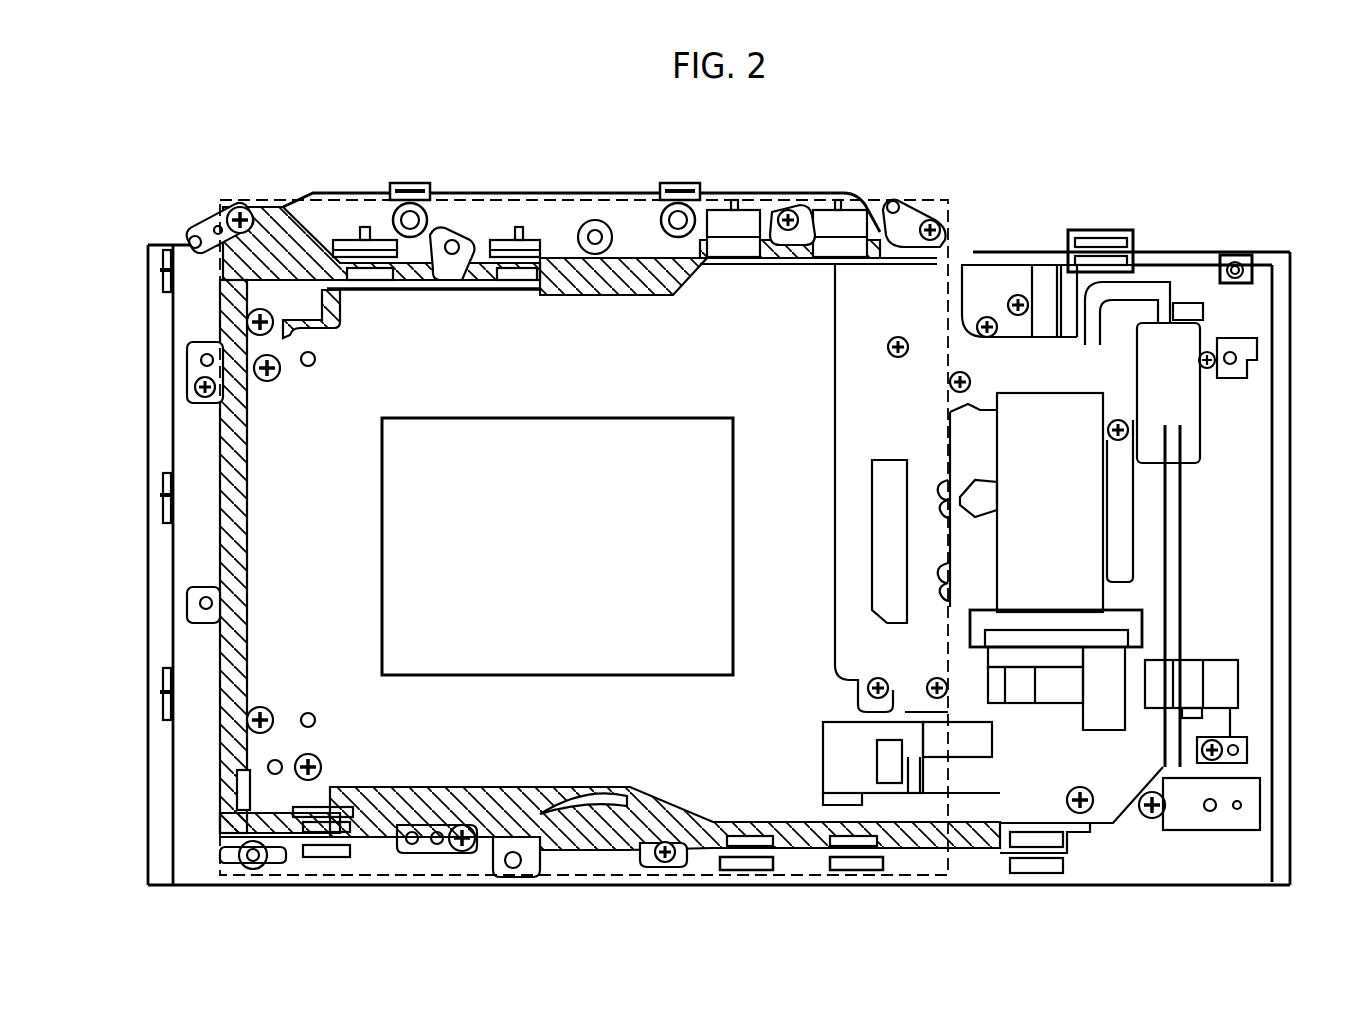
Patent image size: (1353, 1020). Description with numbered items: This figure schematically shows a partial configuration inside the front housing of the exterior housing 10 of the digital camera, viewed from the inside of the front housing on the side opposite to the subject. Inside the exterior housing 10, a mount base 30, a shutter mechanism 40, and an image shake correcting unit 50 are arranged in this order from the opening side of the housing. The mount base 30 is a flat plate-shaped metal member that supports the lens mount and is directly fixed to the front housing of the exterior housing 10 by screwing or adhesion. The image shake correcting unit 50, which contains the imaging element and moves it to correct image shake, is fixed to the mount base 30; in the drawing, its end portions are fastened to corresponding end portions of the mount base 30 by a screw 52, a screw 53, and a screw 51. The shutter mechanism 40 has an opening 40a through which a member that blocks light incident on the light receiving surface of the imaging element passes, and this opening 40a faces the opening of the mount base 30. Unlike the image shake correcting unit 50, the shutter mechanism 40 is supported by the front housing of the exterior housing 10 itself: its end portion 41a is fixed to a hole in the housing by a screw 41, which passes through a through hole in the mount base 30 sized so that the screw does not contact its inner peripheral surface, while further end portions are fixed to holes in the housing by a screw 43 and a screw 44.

The exterior housing 10 is at (322, 210).
The mount base 30 is at (623, 833).
The shutter mechanism 40 is at (257, 432).
The opening 40a is at (607, 457).
The screw 41 is at (242, 322).
The end portion 41a is at (195, 242).
The screw 43 is at (1223, 355).
The screw 44 is at (1163, 817).
The image shake correcting unit 50 is at (484, 200).
The screw 51 is at (460, 853).
The screw 52 is at (250, 297).
The screw 53 is at (928, 220).